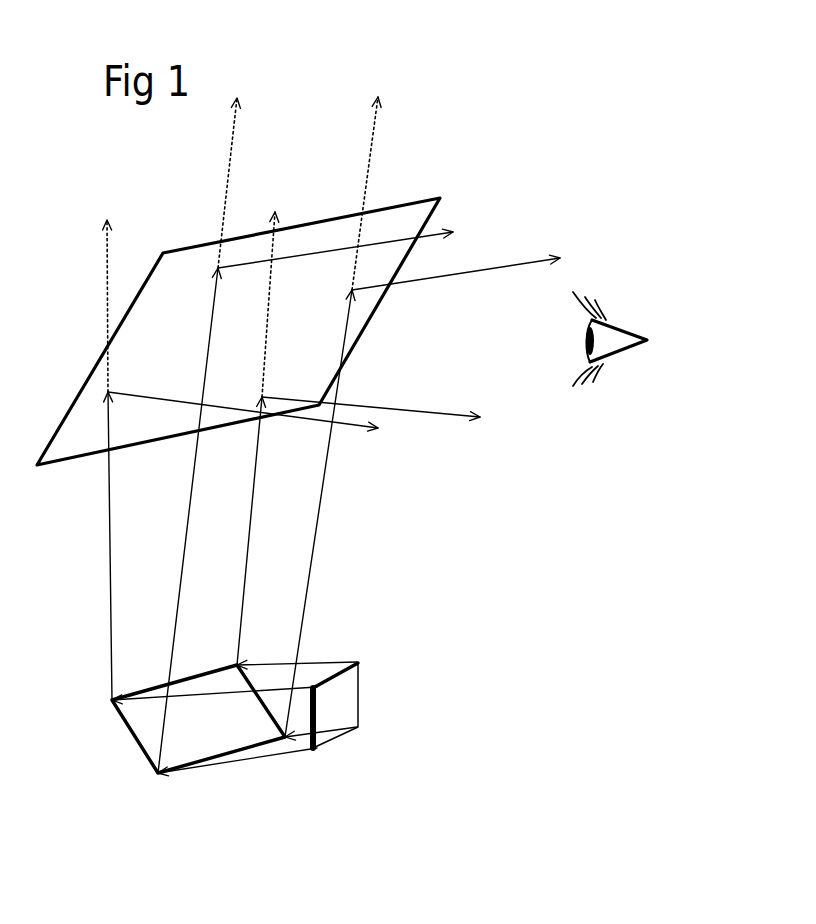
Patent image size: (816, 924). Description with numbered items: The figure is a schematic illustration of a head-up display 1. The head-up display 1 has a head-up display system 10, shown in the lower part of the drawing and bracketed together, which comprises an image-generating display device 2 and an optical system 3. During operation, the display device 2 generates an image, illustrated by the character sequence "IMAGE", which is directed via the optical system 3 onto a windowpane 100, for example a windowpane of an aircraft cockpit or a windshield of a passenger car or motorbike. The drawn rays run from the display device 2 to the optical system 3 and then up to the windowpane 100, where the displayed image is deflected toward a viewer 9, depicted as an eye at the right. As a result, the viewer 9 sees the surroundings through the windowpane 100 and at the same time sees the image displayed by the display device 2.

The head-up display 1 is at (742, 40).
The image-generating display device 2 is at (335, 730).
The optical system 3 is at (145, 758).
The viewer 9 is at (620, 332).
The head-up display system 10 is at (378, 850).
The windowpane 100 is at (440, 198).